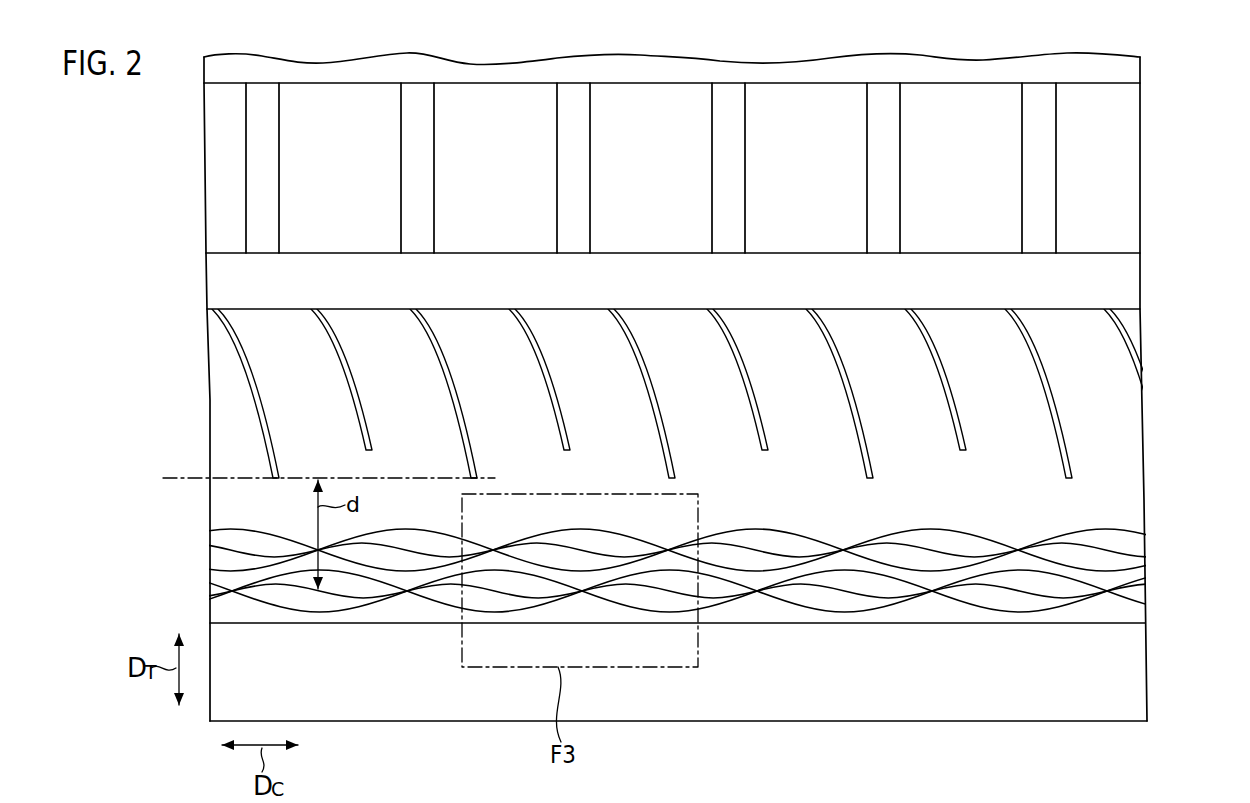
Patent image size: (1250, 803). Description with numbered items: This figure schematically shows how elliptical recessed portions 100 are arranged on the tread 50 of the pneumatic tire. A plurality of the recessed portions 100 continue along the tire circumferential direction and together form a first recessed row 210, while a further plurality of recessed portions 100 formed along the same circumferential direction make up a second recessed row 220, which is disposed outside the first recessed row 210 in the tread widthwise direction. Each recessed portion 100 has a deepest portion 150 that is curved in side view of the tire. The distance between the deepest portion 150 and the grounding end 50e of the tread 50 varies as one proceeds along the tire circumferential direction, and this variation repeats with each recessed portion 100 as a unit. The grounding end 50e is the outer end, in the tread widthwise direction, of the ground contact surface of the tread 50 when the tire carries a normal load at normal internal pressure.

The tread 50 is at (1090, 393).
The grounding end 50e is at (188, 478).
The recessed portion 100 is at (368, 620).
The deepest portion 150 is at (653, 609).
The first recessed row 210 is at (1147, 550).
The second recessed row 220 is at (1147, 593).